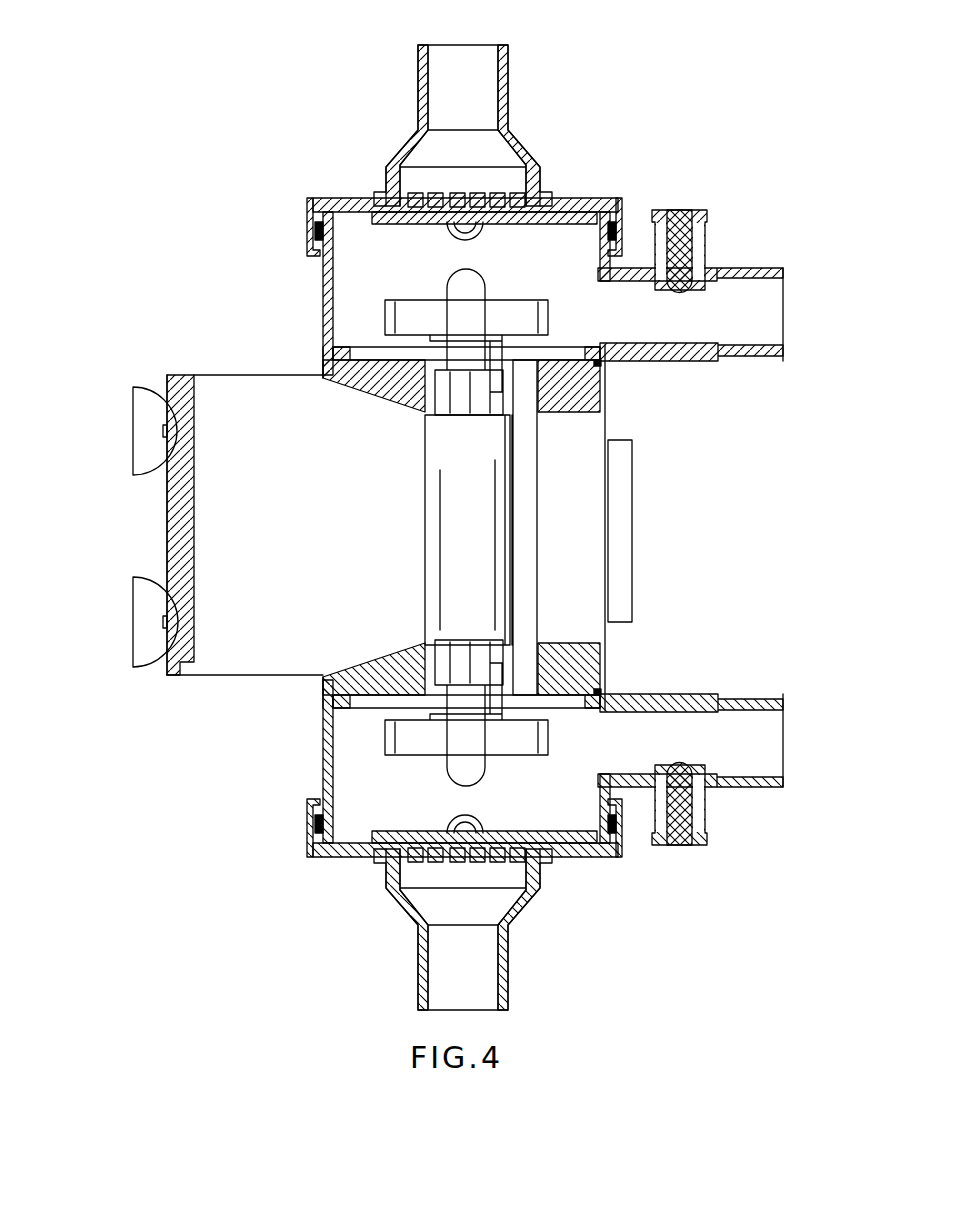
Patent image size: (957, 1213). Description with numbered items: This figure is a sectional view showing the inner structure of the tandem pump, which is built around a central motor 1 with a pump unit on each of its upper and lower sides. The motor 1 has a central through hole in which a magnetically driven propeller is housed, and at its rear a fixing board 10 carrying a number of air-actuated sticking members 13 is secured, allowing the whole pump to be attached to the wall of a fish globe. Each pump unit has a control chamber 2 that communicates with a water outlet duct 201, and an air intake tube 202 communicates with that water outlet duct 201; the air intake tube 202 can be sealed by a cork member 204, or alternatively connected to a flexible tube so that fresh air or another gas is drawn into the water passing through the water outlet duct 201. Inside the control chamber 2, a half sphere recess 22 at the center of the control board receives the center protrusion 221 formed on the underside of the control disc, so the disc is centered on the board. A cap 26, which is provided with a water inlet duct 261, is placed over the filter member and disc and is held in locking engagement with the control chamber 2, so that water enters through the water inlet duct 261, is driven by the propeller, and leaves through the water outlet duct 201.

The motor 1 is at (263, 640).
The fixing board 10 is at (165, 525).
The air-actuated sticking members 13 is at (143, 423).
The control chamber 2 is at (323, 298).
The half sphere recess 22 is at (477, 231).
The center protrusion 221 is at (447, 227).
The cap 26 is at (320, 199).
The water inlet duct 261 is at (418, 86).
The water outlet duct 201 is at (760, 268).
The air intake tube 202 is at (705, 240).
The cork member 204 is at (684, 208).